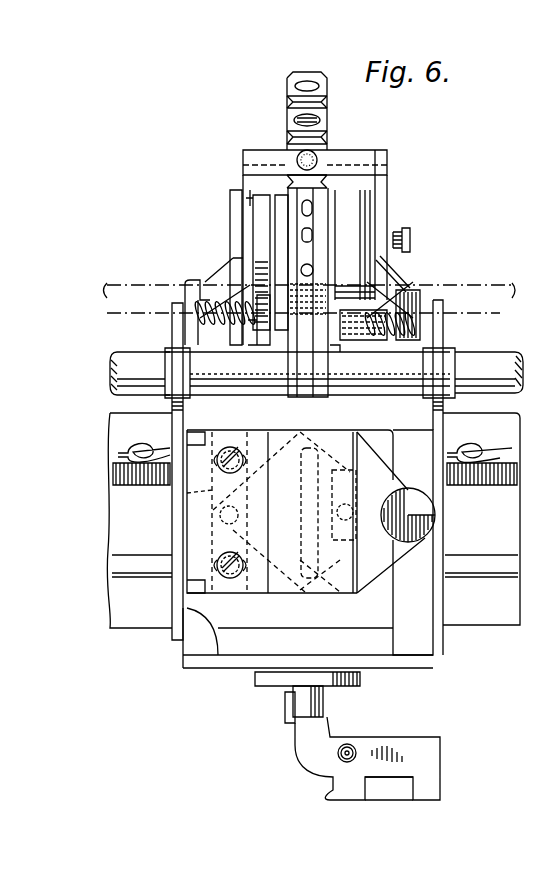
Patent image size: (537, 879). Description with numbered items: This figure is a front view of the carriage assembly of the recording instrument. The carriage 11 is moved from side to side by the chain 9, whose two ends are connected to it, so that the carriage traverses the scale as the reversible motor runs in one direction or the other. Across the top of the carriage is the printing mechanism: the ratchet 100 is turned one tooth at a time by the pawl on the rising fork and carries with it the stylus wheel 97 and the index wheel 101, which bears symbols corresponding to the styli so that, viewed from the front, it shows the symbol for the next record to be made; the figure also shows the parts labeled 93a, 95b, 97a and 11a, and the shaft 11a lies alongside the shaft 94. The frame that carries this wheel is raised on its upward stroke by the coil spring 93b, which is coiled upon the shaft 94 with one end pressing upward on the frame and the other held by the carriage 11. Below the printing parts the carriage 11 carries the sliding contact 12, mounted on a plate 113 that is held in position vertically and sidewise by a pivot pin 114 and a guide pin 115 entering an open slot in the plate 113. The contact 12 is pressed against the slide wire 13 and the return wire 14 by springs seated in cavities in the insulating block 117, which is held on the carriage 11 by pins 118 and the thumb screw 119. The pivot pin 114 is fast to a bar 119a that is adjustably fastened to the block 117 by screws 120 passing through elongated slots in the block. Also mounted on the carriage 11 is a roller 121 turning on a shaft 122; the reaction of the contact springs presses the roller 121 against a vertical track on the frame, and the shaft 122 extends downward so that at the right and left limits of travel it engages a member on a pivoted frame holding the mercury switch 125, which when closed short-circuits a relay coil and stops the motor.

The chain 9 is at (496, 455).
The carriage 11 is at (177, 637).
The shaft 11a is at (500, 355).
The sliding contact 12 is at (340, 590).
The slide wire 13 is at (508, 488).
The return wire 14 is at (502, 573).
The central column 93a is at (320, 398).
The coil spring 93b is at (398, 300).
The shaft 94 is at (447, 330).
The ratchet wheel 95b is at (250, 196).
The stylus wheel 97 is at (290, 352).
The shaft collar 97a is at (318, 355).
The ratchet 100 is at (270, 245).
The index wheel 101 is at (353, 215).
The plate 113 is at (272, 520).
The pivot pin 114 is at (220, 515).
The guide pin 115 is at (344, 503).
The insulating block 117 is at (283, 590).
The pins 118 is at (200, 440).
The thumb screw 119 is at (425, 506).
The bar 119a is at (187, 493).
The screws 120 is at (232, 580).
The roller 121 is at (275, 676).
The shaft 122 is at (325, 705).
The mercury switch 125 is at (330, 784).